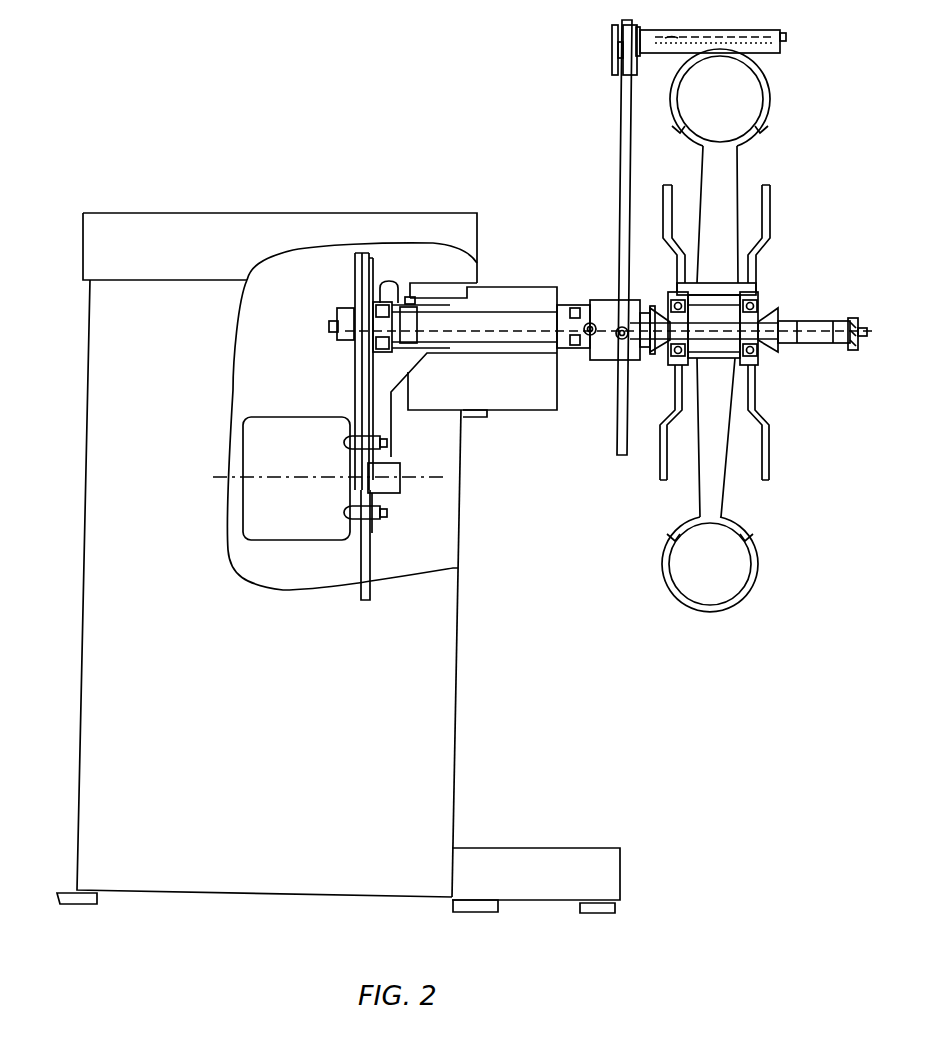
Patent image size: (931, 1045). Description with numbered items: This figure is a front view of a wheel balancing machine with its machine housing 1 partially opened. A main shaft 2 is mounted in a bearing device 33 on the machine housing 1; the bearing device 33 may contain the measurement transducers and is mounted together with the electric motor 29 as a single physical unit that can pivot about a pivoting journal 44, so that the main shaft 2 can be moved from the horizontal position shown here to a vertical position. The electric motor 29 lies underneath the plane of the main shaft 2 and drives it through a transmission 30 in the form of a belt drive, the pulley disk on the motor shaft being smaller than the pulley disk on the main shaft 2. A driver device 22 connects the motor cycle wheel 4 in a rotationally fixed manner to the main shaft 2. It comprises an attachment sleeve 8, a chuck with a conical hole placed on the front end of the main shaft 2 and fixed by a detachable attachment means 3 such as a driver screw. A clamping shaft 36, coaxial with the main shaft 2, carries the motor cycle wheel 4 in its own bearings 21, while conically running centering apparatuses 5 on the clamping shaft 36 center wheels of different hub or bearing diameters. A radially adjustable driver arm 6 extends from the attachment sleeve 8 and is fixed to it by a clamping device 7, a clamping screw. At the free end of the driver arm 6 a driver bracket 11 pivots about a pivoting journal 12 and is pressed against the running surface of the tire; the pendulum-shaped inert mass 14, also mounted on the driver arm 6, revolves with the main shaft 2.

The machine housing 1 is at (432, 705).
The main shaft 2 is at (587, 343).
The attachment means 3 is at (588, 323).
The motor cycle wheel 4 is at (773, 133).
The centering apparatuses 5 is at (745, 315).
The driver arm 6 is at (625, 177).
The clamping device 7 is at (621, 340).
The attachment sleeve 8 is at (612, 303).
The driver bracket 11 is at (783, 50).
The pivoting journal 12 is at (787, 37).
The inert mass 14 is at (609, 30).
The bearings 21 is at (687, 357).
The driver device 22 is at (578, 142).
The electric motor 29 is at (295, 525).
The transmission 30 is at (340, 365).
The bearing device 33 is at (522, 385).
The clamping shaft 36 is at (712, 336).
The pivoting journal 44 is at (305, 382).